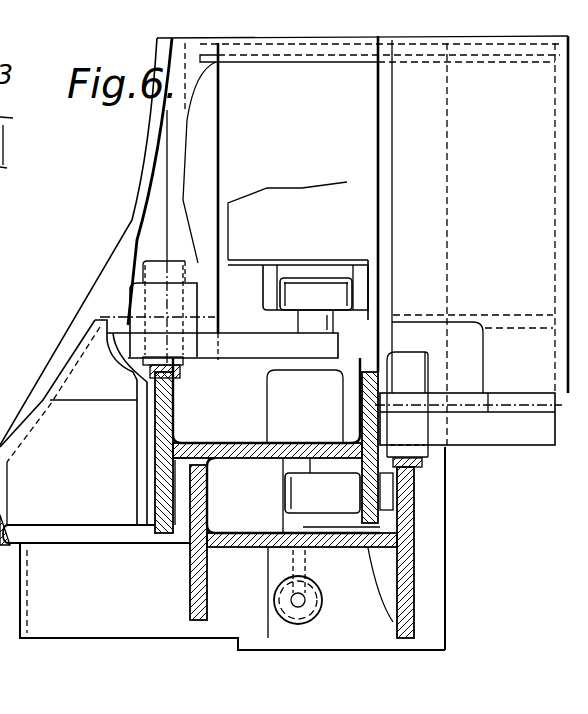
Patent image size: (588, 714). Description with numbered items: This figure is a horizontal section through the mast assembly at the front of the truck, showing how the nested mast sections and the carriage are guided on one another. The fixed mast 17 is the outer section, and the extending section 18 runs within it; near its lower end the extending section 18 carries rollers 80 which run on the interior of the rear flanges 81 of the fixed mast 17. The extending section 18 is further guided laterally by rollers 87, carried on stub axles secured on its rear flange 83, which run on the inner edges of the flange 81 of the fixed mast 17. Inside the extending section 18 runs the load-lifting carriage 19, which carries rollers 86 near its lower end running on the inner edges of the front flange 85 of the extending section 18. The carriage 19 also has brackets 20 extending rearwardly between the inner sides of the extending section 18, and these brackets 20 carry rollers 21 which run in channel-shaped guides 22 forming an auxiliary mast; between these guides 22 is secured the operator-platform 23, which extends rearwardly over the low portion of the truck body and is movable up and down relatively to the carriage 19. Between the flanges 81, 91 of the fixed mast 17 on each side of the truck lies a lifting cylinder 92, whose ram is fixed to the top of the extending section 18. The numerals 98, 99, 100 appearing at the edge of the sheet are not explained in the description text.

The fixed mast 17 is at (235, 533).
The extending section 18 is at (227, 450).
The load-lifting carriage 19 is at (130, 225).
The brackets 20 is at (243, 342).
The rollers 21 is at (313, 290).
The channel-shaped guides 22 is at (272, 278).
The operator-platform 23 is at (273, 203).
The rollers 80 is at (393, 488).
The rear flanges 81 is at (410, 520).
The rear flange 83 is at (372, 388).
The front flange 85 is at (157, 418).
The rollers 86 is at (157, 275).
The rollers 87 is at (417, 430).
The flange 91 is at (193, 597).
The lifting cylinder 92 is at (293, 598).
The element 98 is at (12, 208).
The element 99 is at (22, 121).
The element 100 is at (28, 159).